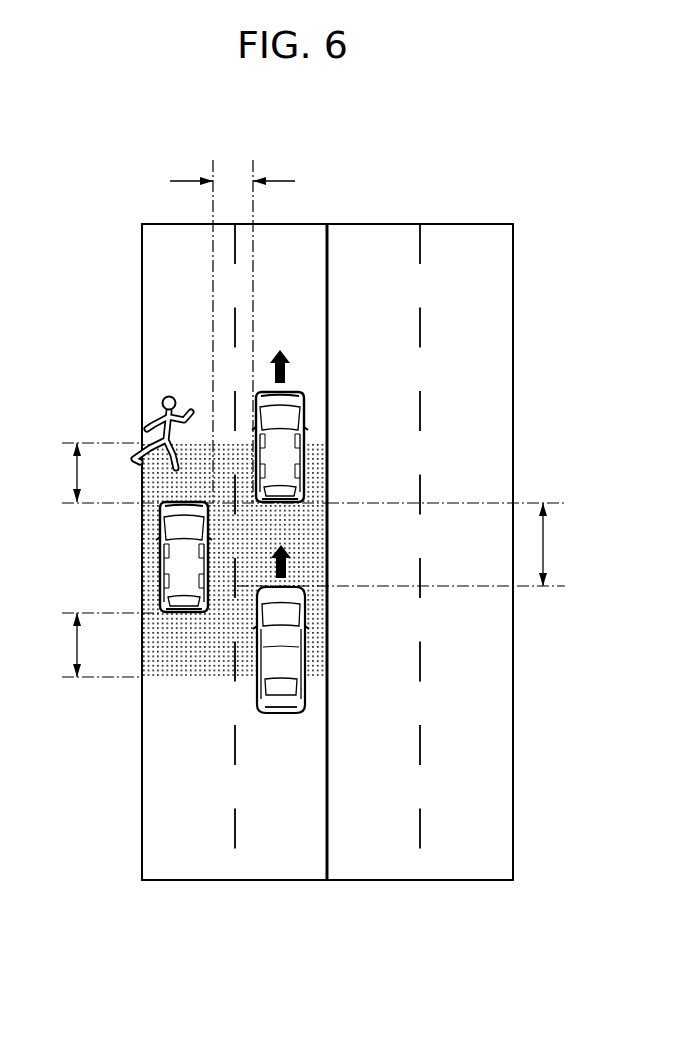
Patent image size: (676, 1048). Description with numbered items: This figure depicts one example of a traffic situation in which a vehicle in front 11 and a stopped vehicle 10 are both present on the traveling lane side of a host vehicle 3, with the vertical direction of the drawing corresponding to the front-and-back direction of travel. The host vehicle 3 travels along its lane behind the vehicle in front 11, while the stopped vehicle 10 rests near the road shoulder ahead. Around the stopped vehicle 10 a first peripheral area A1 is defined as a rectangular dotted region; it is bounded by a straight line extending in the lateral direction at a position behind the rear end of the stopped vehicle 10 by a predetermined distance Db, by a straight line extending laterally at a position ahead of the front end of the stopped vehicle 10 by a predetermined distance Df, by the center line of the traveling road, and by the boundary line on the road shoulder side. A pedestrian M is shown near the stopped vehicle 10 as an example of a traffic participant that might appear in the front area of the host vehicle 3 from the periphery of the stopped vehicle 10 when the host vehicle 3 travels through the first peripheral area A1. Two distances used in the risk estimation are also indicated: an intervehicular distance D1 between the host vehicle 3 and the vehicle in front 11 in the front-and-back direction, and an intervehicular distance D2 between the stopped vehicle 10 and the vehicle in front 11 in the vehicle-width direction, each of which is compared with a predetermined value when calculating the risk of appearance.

The host vehicle 3 is at (306, 655).
The stopped vehicle 10 is at (160, 560).
The vehicle in front 11 is at (306, 418).
The pedestrian M is at (161, 401).
The first peripheral area A1 is at (207, 443).
The intervehicular distance D1 is at (561, 544).
The intervehicular distance D2 is at (232, 163).
The predetermined distance Df is at (60, 472).
The predetermined distance Db is at (60, 645).